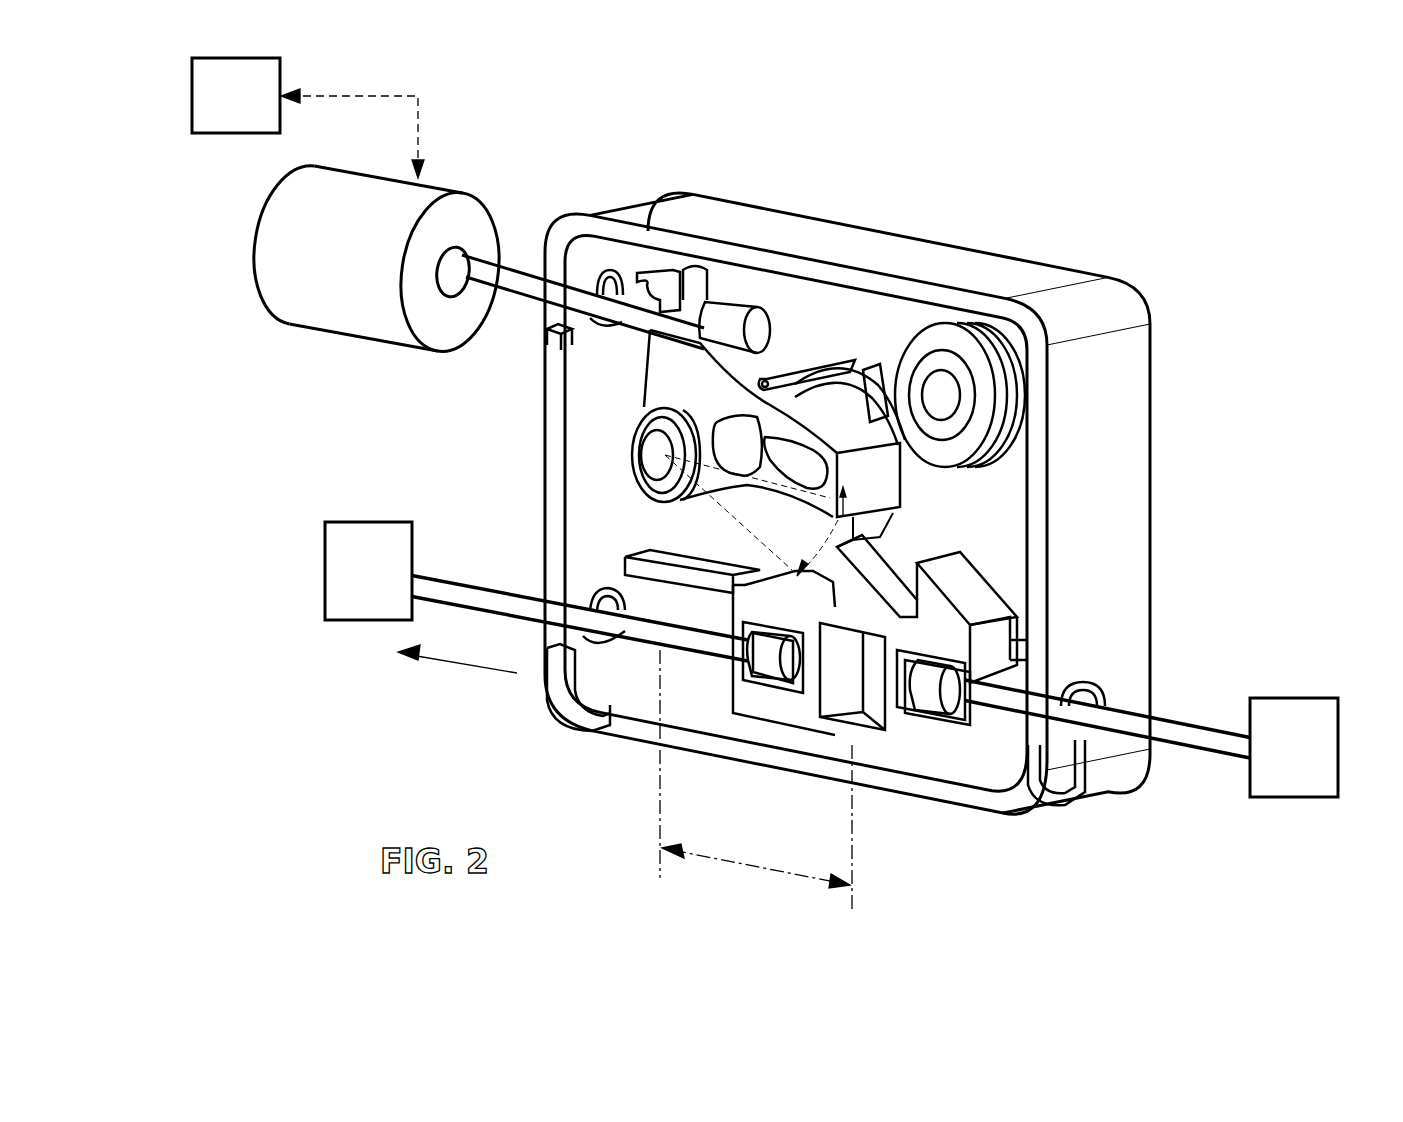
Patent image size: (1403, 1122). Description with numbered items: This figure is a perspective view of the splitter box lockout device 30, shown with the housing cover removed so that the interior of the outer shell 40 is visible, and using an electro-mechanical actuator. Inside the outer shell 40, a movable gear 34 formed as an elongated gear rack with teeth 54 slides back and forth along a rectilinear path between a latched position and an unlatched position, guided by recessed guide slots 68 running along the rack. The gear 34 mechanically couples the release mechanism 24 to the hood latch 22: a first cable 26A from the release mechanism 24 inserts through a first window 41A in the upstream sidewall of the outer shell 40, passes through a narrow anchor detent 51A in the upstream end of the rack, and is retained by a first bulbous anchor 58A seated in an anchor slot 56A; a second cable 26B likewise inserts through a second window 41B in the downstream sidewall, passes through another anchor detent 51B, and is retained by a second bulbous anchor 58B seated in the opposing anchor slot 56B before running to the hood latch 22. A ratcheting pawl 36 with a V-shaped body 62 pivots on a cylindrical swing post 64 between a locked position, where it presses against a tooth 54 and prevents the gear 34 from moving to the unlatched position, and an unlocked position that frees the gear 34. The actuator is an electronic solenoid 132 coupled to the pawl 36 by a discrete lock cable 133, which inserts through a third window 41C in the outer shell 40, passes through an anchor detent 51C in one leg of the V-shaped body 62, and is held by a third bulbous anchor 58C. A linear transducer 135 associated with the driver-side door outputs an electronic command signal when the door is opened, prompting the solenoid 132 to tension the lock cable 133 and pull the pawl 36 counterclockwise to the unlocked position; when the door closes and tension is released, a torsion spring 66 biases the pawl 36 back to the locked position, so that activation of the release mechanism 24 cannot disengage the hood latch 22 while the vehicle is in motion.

The lockout device 30 is at (1284, 121).
The linear transducer 135 is at (190, 73).
The electronic solenoid 132 is at (292, 183).
The lock cable 133 is at (517, 270).
The outer shell 40 is at (1097, 297).
The third window 41C is at (540, 303).
The anchor detent 51C is at (650, 330).
The third bulbous anchor 58C is at (731, 307).
The V-shaped body 62 is at (770, 372).
The torsion spring 66 is at (843, 367).
The guide slots 68 is at (943, 327).
The pawl 36 is at (612, 433).
The swing post 64 is at (640, 458).
The teeth 54 is at (878, 558).
The gear 34 is at (1013, 665).
The release mechanism 24 is at (322, 545).
The first cable 26A is at (440, 574).
The first window 41A is at (578, 652).
The anchor slot 56A is at (848, 752).
The anchor detent 51A is at (737, 647).
The first bulbous anchor 58A is at (793, 682).
The anchor slot 56B is at (897, 708).
The second bulbous anchor 58B is at (933, 708).
The anchor detent 51B is at (973, 712).
The second cable 26B is at (1212, 753).
The second window 41B is at (1063, 749).
The hood latch 22 is at (1318, 800).